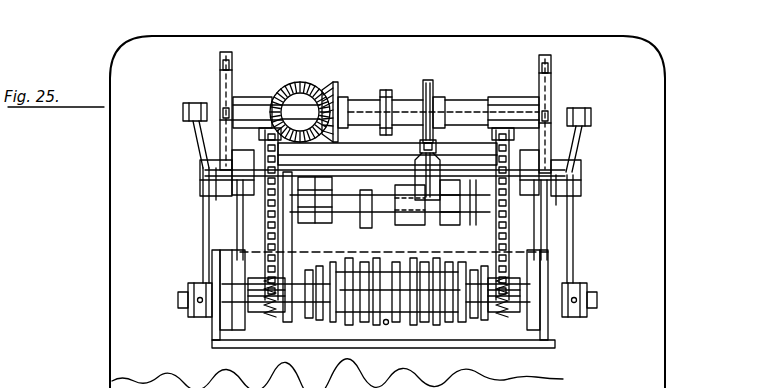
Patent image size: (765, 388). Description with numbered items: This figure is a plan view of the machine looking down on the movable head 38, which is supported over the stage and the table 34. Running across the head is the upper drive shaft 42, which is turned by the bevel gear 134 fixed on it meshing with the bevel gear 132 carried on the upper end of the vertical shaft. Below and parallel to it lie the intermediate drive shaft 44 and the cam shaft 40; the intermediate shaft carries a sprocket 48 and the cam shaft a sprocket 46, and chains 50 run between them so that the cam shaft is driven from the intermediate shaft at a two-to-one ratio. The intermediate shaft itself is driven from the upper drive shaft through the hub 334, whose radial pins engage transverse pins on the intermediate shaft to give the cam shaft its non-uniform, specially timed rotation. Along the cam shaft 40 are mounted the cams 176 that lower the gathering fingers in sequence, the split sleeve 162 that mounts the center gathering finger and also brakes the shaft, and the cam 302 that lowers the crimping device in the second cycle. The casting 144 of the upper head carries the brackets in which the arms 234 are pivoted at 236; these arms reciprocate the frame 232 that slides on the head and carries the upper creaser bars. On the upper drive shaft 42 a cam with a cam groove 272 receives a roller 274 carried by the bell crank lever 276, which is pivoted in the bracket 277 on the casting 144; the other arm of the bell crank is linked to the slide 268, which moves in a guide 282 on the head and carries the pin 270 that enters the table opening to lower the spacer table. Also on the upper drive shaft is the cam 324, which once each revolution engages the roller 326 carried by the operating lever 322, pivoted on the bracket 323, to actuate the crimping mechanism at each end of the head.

The table 34 is at (650, 163).
The movable head 38 is at (548, 228).
The cam shaft 40 is at (485, 328).
The upper drive shaft 42 is at (464, 102).
The intermediate drive shaft 44 is at (486, 185).
The sprocket 46 is at (269, 318).
The sprocket 48 is at (262, 125).
The chain 50 is at (280, 243).
The bevel gear 132 is at (300, 82).
The bevel gear 134 is at (334, 84).
The casting 144 is at (343, 150).
The split sleeve 162 is at (384, 268).
The cam 176 is at (326, 320).
The frame 232 is at (212, 330).
The arm 234 is at (205, 232).
The pivot 236 is at (548, 200).
The slide 268 is at (266, 320).
The pin 270 is at (220, 86).
The cam groove 272 is at (220, 75).
The roller 274 is at (218, 148).
The bell crank lever 276 is at (238, 233).
The bracket 277 is at (226, 197).
The guide 282 is at (246, 322).
The cam 302 is at (307, 318).
The operating lever 322 is at (453, 224).
The bracket 323 is at (447, 190).
The cam 324 is at (428, 78).
The roller 326 is at (424, 142).
The hub 334 is at (393, 92).